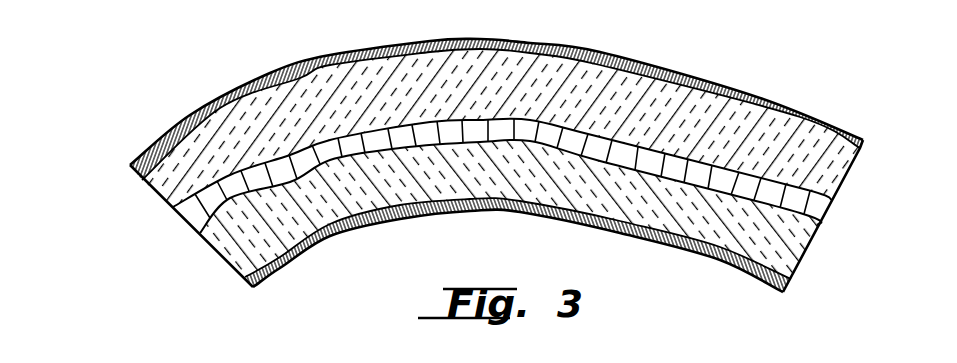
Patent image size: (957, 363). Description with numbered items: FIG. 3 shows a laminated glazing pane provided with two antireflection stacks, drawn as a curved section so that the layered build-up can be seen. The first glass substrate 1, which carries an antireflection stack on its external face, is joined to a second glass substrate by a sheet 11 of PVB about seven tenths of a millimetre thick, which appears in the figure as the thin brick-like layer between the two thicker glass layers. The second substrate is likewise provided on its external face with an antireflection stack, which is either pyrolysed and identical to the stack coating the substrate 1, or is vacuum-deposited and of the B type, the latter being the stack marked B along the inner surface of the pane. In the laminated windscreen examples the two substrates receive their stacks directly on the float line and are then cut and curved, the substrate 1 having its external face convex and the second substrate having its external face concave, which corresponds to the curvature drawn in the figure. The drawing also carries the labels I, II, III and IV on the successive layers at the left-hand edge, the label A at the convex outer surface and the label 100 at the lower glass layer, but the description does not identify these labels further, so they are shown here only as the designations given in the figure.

The substrate 1 is at (486, 172).
The sheet of PVB 11 is at (817, 208).
The inner layer 100 is at (792, 247).
The first (outer) layer I is at (464, 115).
The second layer II is at (178, 204).
The third layer III is at (512, 190).
The fourth (inner) layer IV is at (480, 252).
The outer surface A is at (806, 114).
The antireflection stack of the "B" type B is at (700, 245).